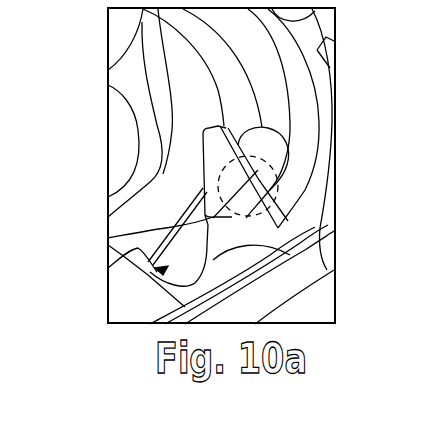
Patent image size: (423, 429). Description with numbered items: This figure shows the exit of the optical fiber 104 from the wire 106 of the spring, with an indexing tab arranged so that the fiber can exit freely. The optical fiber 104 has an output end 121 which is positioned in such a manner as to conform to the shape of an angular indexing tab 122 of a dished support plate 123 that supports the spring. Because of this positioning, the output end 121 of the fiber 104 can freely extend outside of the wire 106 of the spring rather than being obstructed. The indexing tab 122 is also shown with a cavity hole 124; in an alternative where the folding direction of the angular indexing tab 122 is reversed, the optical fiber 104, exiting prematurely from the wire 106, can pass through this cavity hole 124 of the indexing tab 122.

The optical fiber 104 is at (108, 238).
The wire 106 is at (273, 163).
The output end 121 is at (303, 182).
The angular indexing tab 122 is at (225, 165).
The dished support plate 123 is at (222, 273).
The cavity hole 124 is at (108, 268).